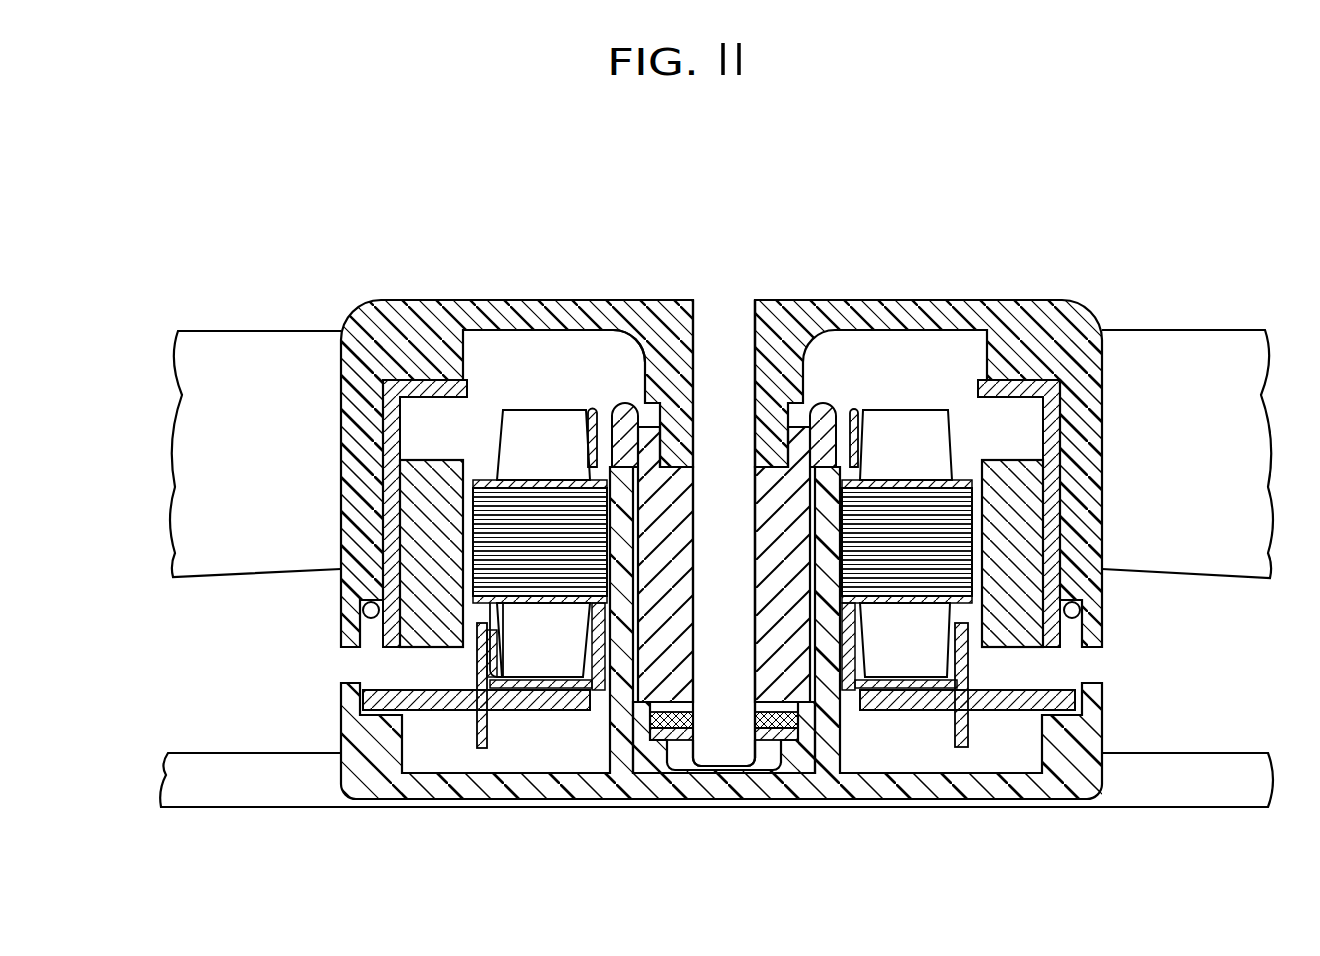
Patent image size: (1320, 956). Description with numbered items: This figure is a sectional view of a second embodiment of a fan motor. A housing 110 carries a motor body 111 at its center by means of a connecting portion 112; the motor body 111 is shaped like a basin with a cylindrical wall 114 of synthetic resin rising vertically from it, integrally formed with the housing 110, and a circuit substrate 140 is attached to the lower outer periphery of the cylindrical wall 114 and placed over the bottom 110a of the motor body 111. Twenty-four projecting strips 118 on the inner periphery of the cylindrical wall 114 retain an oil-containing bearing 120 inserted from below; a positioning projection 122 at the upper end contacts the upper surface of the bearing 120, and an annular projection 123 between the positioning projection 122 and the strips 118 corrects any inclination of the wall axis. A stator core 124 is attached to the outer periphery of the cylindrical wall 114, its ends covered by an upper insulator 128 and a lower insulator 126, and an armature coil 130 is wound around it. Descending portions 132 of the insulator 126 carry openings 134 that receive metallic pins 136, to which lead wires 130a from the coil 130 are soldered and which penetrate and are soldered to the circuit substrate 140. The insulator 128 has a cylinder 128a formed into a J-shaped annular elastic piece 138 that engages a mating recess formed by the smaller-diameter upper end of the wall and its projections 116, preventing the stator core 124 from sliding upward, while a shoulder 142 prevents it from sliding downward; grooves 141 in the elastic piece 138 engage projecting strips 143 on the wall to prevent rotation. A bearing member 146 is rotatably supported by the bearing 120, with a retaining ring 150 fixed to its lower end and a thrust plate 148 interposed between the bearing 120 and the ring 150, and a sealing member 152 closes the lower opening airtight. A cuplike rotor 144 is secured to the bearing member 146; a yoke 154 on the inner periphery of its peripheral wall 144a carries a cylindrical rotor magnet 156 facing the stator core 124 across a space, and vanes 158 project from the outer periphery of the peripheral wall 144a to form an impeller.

The housing 110 is at (398, 813).
The bottom of the motor body 110a is at (1015, 790).
The motor body 111 is at (547, 785).
The connecting portion 112 is at (270, 790).
The cylindrical wall 114 is at (827, 662).
The projections 116 is at (833, 407).
The projecting strips 118 is at (672, 540).
The oil-containing bearing 120 is at (648, 655).
The positioning projection 122 is at (633, 365).
The annular projection 123 is at (670, 494).
The stator core 124 is at (497, 523).
The insulator 126 is at (923, 603).
The insulator 128 is at (975, 400).
The cylinder 128a is at (912, 425).
The armature coil 130 is at (930, 478).
The lead wires 130a is at (947, 682).
The descending portions 132 is at (470, 657).
The openings 134 is at (460, 700).
The metallic pins 136 is at (488, 727).
The annular elastic piece 138 is at (856, 403).
The circuit substrate 140 is at (897, 705).
The grooves 141 is at (540, 405).
The shoulder 142 is at (598, 665).
The projecting strips for preventing rotation 143 is at (607, 413).
The rotor 144 is at (646, 322).
The peripheral wall 144a is at (353, 455).
The bearing member 146 is at (735, 738).
The thrust plate 148 is at (667, 742).
The retaining ring 150 is at (693, 787).
The sealing member 152 is at (793, 748).
The yoke 154 is at (380, 577).
The rotor magnet 156 is at (427, 467).
The vanes 158 is at (242, 362).